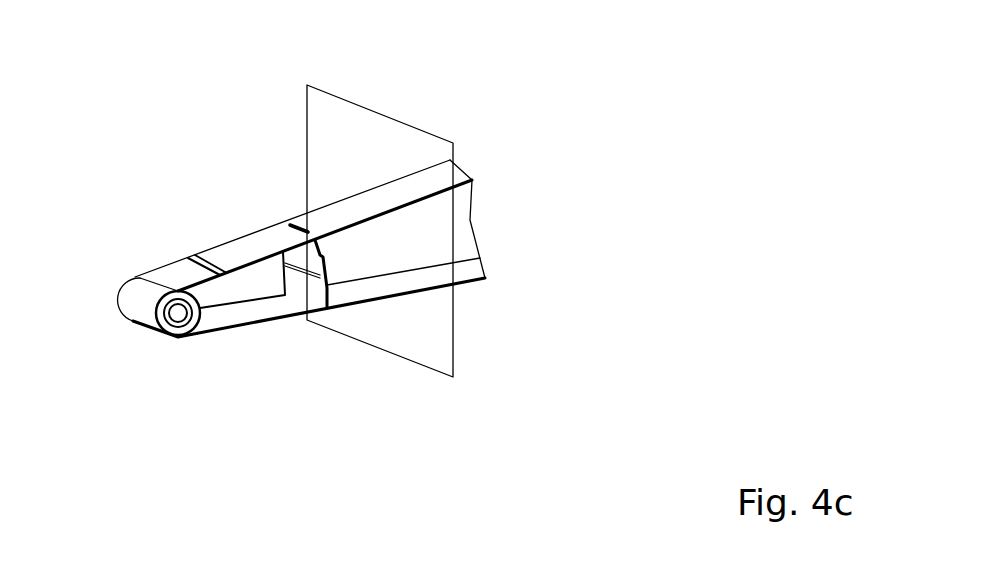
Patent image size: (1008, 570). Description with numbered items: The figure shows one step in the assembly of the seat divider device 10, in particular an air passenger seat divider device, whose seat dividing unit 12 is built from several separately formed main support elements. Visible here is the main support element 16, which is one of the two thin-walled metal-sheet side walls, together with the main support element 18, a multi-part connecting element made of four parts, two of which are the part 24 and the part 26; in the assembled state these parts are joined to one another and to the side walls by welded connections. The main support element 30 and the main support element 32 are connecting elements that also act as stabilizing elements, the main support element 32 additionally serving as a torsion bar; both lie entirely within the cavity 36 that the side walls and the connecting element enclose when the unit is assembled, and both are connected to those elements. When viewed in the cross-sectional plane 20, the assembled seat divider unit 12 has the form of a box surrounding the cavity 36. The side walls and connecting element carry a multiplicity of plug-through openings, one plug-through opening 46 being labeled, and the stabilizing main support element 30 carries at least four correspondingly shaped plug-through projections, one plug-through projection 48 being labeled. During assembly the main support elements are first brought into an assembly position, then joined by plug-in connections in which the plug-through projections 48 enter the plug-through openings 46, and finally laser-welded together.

The seat divider device 10 is at (695, 71).
The seat dividing unit 12 is at (695, 71).
The main support element 16 is at (440, 223).
The main support element 18 is at (483, 162).
The cross-sectional plane 20 is at (455, 335).
The part 24 is at (413, 185).
The part 26 is at (138, 305).
The main support element 30 is at (307, 297).
The main support element 32 is at (172, 343).
The cavity 36 is at (385, 265).
The plug-through opening 46 is at (307, 223).
The plug-through projection 48 is at (327, 278).